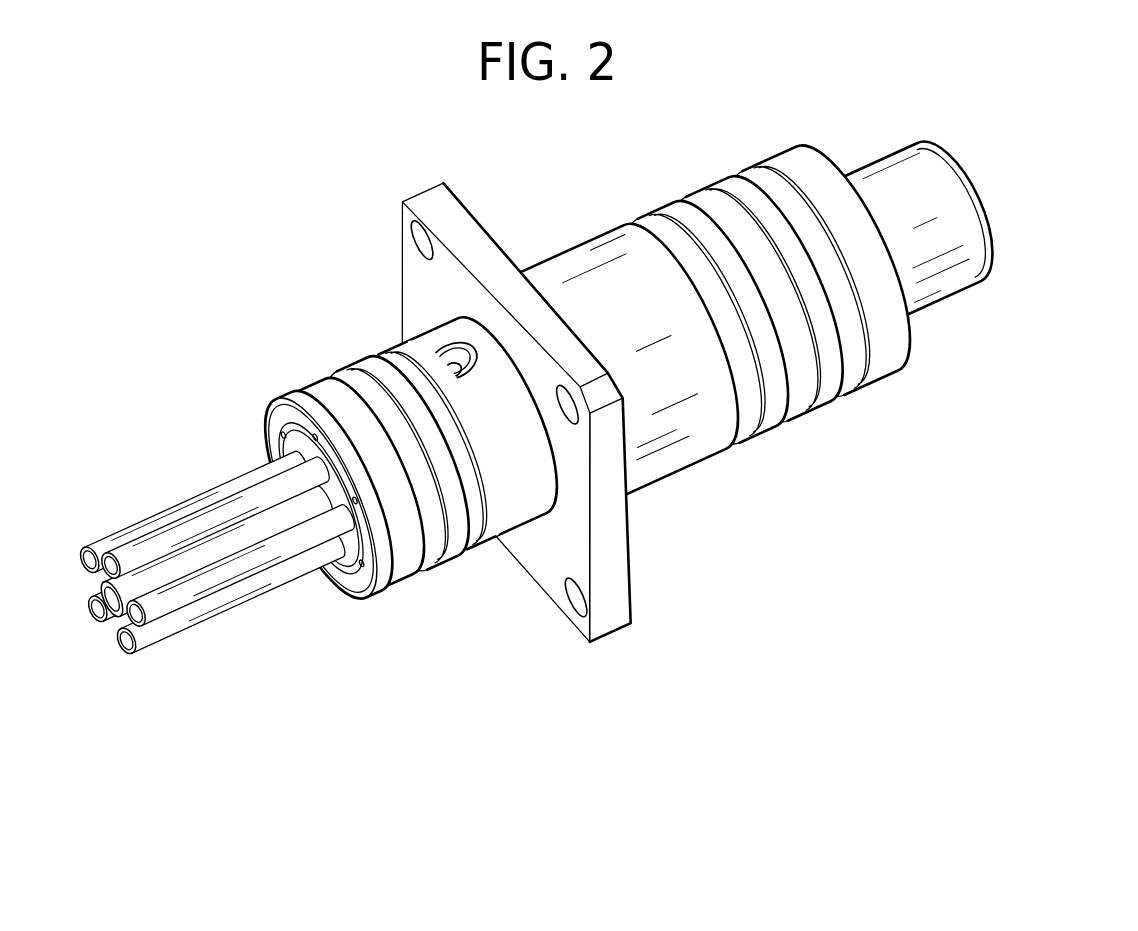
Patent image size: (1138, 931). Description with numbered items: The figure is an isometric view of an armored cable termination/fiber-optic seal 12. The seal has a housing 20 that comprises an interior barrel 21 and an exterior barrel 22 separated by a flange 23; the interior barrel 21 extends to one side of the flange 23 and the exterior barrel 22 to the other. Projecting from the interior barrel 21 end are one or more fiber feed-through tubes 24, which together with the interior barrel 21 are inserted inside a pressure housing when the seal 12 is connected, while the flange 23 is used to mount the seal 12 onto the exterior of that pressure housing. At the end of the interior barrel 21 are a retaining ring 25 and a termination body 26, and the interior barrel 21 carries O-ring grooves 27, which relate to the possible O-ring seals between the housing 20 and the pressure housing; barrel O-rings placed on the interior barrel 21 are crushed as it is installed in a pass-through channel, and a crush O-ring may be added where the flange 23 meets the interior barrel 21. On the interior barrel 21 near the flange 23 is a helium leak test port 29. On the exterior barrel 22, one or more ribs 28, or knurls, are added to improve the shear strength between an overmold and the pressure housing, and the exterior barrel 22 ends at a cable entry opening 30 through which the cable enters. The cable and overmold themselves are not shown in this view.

The armored cable termination/fiber-optic seal 12 is at (684, 451).
The housing 20 is at (684, 467).
The interior barrel 21 is at (476, 441).
The exterior barrel 22 is at (789, 386).
The flange 23 is at (462, 212).
The fiber feed-through tubes 24 is at (109, 532).
The retaining ring 25 is at (353, 576).
The termination body 26 is at (338, 566).
The O-ring grooves 27 is at (410, 599).
The ribs 28 is at (762, 306).
The helium leak test port 29 is at (442, 362).
The cable entry opening 30 is at (986, 186).